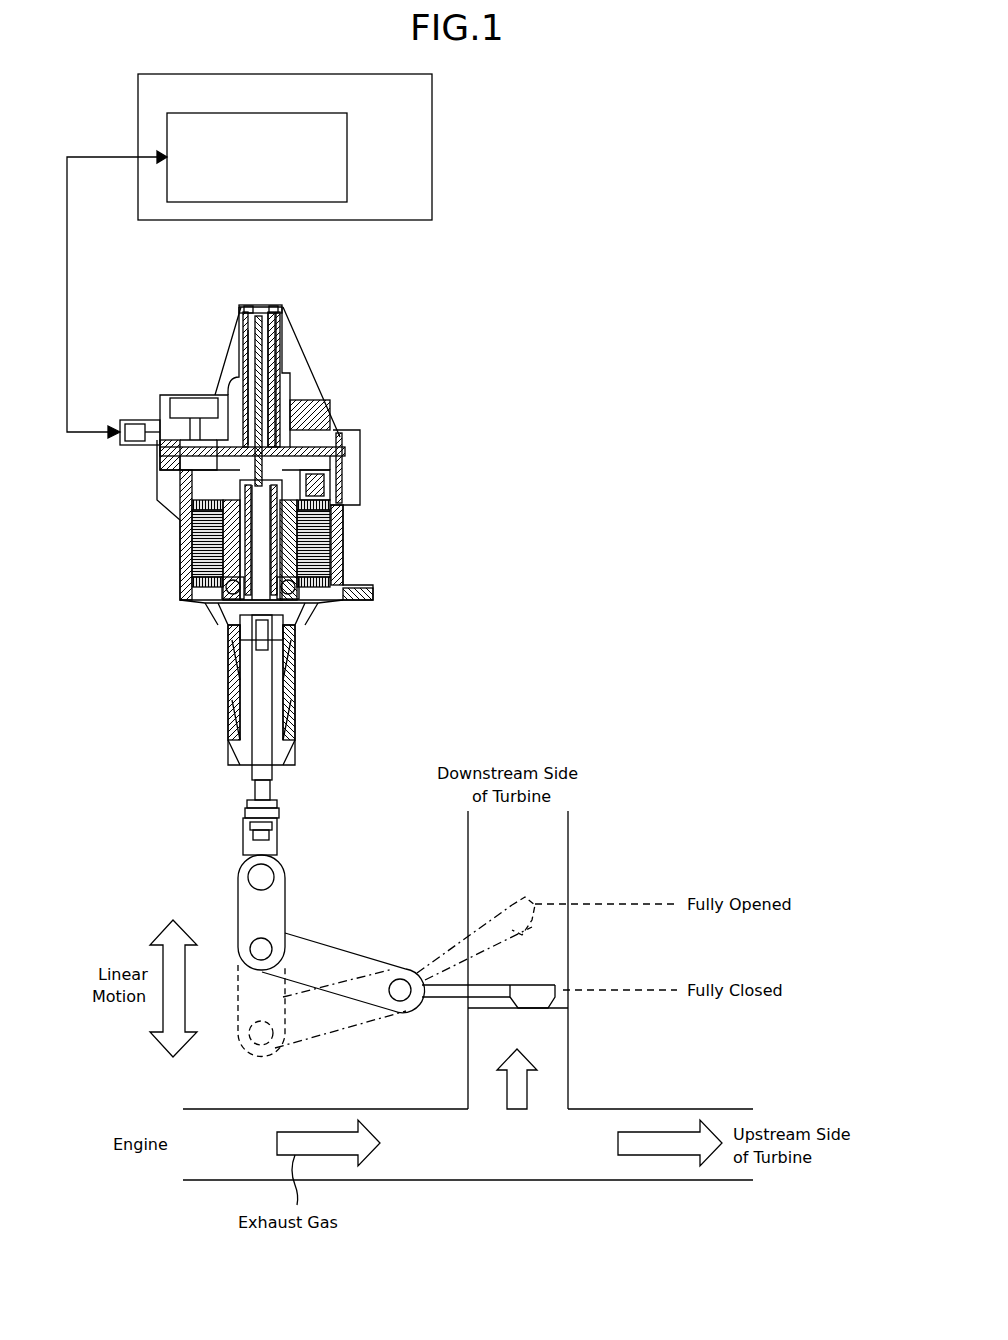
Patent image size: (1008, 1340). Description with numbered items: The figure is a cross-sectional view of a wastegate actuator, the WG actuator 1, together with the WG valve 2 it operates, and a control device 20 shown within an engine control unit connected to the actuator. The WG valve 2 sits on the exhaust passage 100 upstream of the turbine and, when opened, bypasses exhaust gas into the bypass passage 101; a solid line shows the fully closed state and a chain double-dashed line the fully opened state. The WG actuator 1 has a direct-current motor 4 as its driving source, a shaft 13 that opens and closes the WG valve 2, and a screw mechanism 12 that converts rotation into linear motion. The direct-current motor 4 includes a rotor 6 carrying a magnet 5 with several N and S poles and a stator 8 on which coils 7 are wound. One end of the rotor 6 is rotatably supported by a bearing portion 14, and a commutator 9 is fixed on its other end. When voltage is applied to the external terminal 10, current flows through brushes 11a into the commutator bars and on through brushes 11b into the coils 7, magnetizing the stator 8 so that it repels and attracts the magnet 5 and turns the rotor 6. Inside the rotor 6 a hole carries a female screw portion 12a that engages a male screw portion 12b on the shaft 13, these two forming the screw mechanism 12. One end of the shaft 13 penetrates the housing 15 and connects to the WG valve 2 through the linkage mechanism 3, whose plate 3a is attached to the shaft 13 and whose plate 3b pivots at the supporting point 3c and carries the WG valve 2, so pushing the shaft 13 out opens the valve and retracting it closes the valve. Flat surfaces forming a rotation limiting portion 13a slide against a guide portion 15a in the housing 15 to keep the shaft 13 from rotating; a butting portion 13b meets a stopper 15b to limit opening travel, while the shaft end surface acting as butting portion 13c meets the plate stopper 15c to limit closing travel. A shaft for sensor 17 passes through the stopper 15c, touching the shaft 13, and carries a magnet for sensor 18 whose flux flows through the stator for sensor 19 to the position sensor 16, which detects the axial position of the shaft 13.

The WG actuator 1 is at (262, 533).
The WG valve 2 is at (542, 985).
The linkage mechanism 3 is at (285, 937).
The plate 3a is at (272, 896).
The plate 3b is at (322, 960).
The supporting point 3c is at (253, 952).
The direct-current motor 4 is at (300, 408).
The magnet 5 is at (330, 555).
The rotor 6 is at (330, 527).
The coils 7 is at (190, 497).
The stator 8 is at (190, 530).
The commutator 9 is at (352, 484).
The external terminal 10 is at (160, 420).
The brushes 11a is at (163, 463).
The brushes 11b is at (352, 478).
The screw mechanism 12 is at (192, 540).
The female screw portion 12a is at (192, 555).
The male screw portion 12b is at (200, 590).
The shaft 13 is at (270, 775).
The rotation limiting portion 13a is at (228, 640).
The butting portion 13b is at (243, 662).
The butting portion 13c is at (345, 500).
The bearing portion 14 is at (193, 605).
The housing 15 is at (293, 620).
The guide portion 15a is at (273, 673).
The stopper 15b is at (240, 715).
The stopper 15c is at (310, 440).
The position sensor 16 is at (252, 377).
The shaft for sensor 17 is at (267, 410).
The magnet for sensor 18 is at (262, 345).
The stator for sensor 19 is at (273, 305).
The control device 20 is at (347, 152).
The exhaust passage 100 is at (573, 1180).
The bypass passage 101 is at (568, 855).